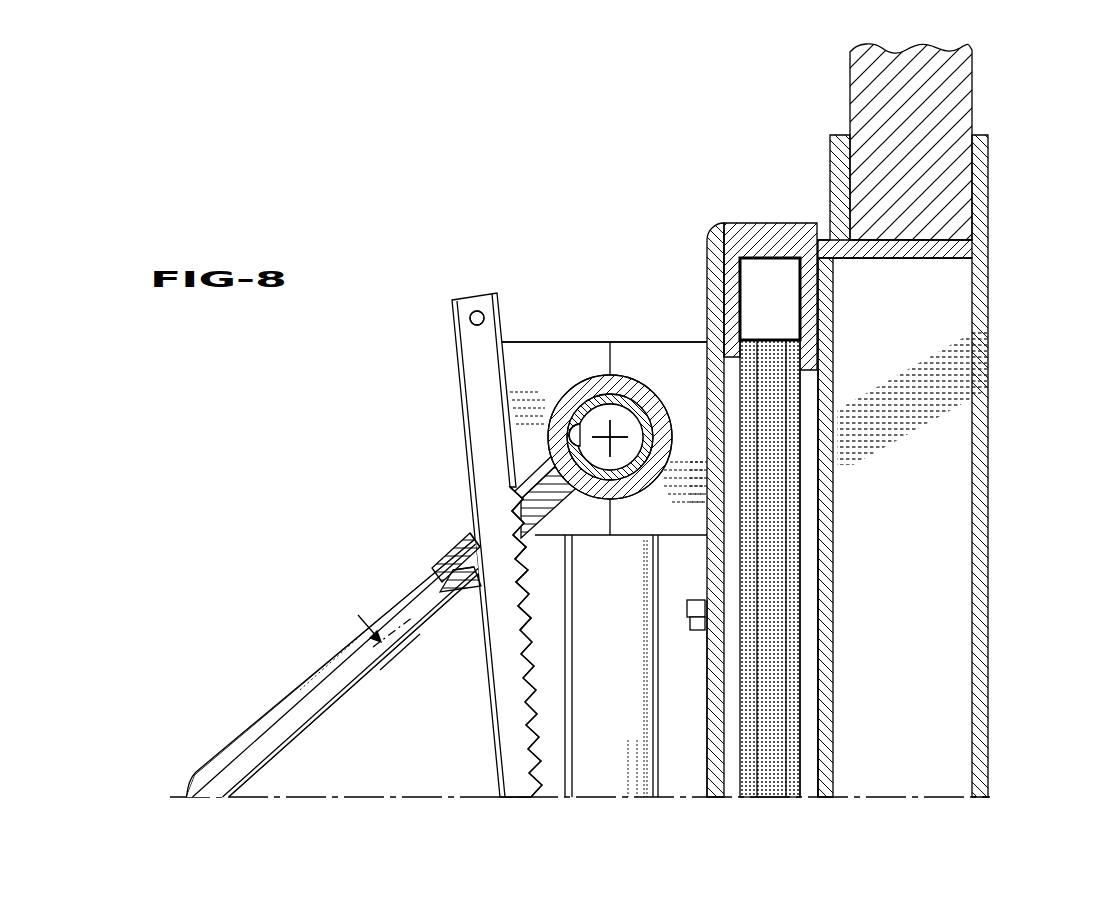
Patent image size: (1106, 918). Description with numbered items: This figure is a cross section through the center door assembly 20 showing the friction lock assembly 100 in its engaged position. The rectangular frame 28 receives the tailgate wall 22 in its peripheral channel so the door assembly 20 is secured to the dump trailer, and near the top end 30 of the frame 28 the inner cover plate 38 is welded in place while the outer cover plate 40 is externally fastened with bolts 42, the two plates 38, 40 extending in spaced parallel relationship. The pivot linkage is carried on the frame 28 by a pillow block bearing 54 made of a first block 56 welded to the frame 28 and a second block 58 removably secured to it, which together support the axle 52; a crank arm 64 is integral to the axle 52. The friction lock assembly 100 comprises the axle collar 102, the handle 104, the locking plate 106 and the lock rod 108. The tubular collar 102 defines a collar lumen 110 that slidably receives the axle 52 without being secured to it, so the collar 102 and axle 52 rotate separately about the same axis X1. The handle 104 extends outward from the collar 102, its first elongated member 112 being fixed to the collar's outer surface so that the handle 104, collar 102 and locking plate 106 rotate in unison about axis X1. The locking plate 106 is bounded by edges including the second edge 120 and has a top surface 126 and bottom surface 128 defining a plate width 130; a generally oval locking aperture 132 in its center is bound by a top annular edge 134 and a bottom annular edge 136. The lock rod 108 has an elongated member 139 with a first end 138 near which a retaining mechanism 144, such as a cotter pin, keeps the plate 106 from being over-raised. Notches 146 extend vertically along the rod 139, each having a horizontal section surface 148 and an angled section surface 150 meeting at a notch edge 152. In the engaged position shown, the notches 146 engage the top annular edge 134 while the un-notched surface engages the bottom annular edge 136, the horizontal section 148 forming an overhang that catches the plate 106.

The door assembly 20 is at (400, 178).
The tailgate wall 22 is at (853, 98).
The rectangular frame 28 is at (989, 184).
The top end 30 is at (776, 212).
The inner cover plate 38 is at (836, 545).
The outer cover plate 40 is at (711, 700).
The bolts 42 is at (688, 628).
The axle 52 is at (587, 400).
The pillow block bearing 54 is at (564, 341).
The first block 56 is at (674, 352).
The second block 58 is at (532, 352).
The crank arm 64 is at (634, 558).
The friction lock assembly 100 is at (378, 471).
The axle collar 102 is at (638, 392).
The handle 104 is at (261, 718).
The locking plate 106 is at (458, 569).
The lock rod 108 is at (493, 728).
The collar lumen 110 is at (569, 435).
The first elongated member 112 is at (333, 667).
The second edge 120 is at (417, 608).
The top surface 126 is at (452, 586).
The bottom surface 128 is at (465, 606).
The plate width 130 is at (402, 656).
The locking aperture 132 is at (467, 553).
The top annular edge 134 is at (505, 522).
The bottom annular edge 136 is at (538, 604).
The first end 138 is at (453, 312).
The elongated member 139 is at (508, 756).
The retaining mechanism 144 is at (477, 311).
The notches 146 is at (543, 655).
The horizontal section surface 148 is at (538, 627).
The angled section surface 150 is at (538, 645).
The notch edge 152 is at (538, 575).
The axis X1 is at (624, 433).